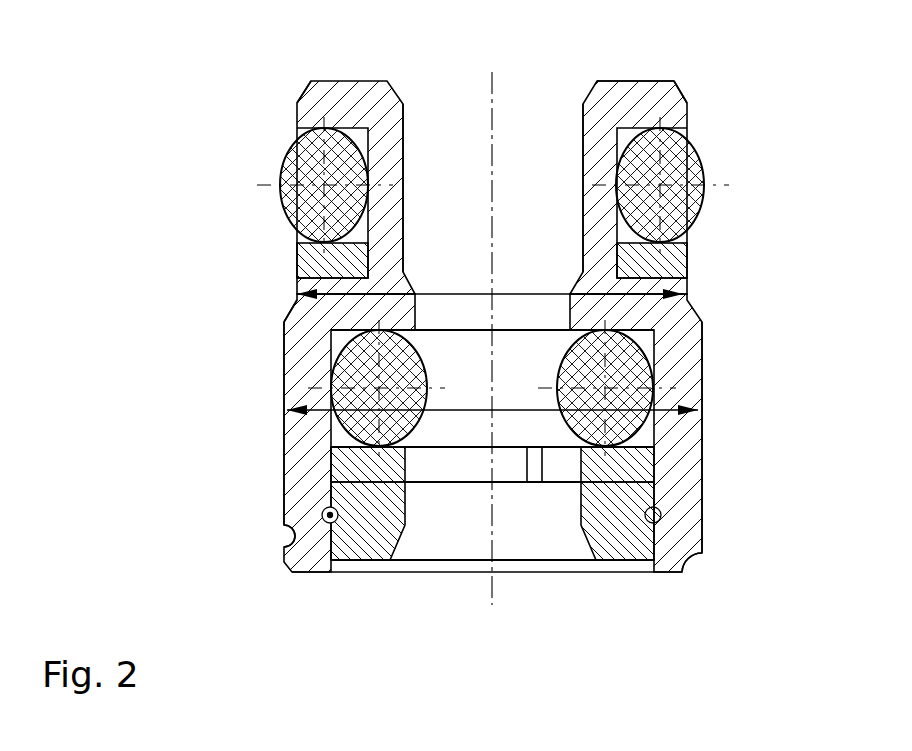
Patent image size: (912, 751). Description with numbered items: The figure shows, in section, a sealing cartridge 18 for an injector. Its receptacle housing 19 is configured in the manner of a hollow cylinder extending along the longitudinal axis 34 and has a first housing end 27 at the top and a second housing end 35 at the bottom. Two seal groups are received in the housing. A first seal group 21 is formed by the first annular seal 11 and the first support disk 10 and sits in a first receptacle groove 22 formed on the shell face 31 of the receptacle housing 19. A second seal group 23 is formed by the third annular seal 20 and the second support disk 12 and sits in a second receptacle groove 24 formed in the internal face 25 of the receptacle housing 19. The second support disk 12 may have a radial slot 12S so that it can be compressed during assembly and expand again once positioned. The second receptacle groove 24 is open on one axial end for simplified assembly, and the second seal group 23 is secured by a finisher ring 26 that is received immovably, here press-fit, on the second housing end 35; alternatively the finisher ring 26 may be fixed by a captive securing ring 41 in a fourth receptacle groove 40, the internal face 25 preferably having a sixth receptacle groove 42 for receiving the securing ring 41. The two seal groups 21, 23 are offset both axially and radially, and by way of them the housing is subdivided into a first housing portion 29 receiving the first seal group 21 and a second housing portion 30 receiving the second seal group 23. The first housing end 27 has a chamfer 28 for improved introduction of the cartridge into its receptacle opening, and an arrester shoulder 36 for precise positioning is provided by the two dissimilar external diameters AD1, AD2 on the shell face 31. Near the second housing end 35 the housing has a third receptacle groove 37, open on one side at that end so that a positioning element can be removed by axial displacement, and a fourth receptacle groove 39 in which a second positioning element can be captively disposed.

The first support disk 10 is at (675, 263).
The first annular seal 11 is at (668, 178).
The second support disk 12 is at (627, 468).
The radial slot 12S is at (541, 467).
The sealing cartridge 18 is at (705, 73).
The receptacle housing 19 is at (668, 103).
The third annular seal 20 is at (627, 370).
The first seal group 21 is at (273, 243).
The first receptacle groove 22 is at (365, 147).
The second seal group 23 is at (307, 453).
The second receptacle groove 24 is at (337, 343).
The internal face 25 is at (402, 145).
The finisher ring 26 is at (622, 517).
The first housing end 27 is at (633, 65).
The chamfer 28 is at (305, 92).
The first housing portion 29 is at (247, 224).
The second housing portion 30 is at (260, 450).
The shell face 31 is at (702, 448).
The longitudinal axis 34 is at (490, 72).
The second housing end 35 is at (327, 590).
The arrester shoulder 36 is at (278, 312).
The third receptacle groove 37 is at (697, 568).
The fourth receptacle groove 39 is at (278, 538).
The fourth receptacle groove 40 is at (342, 527).
The captive securing ring 41 is at (326, 516).
The sixth receptacle groove 42 is at (320, 527).
The external diameter AD1 is at (643, 294).
The external diameter AD2 is at (655, 410).